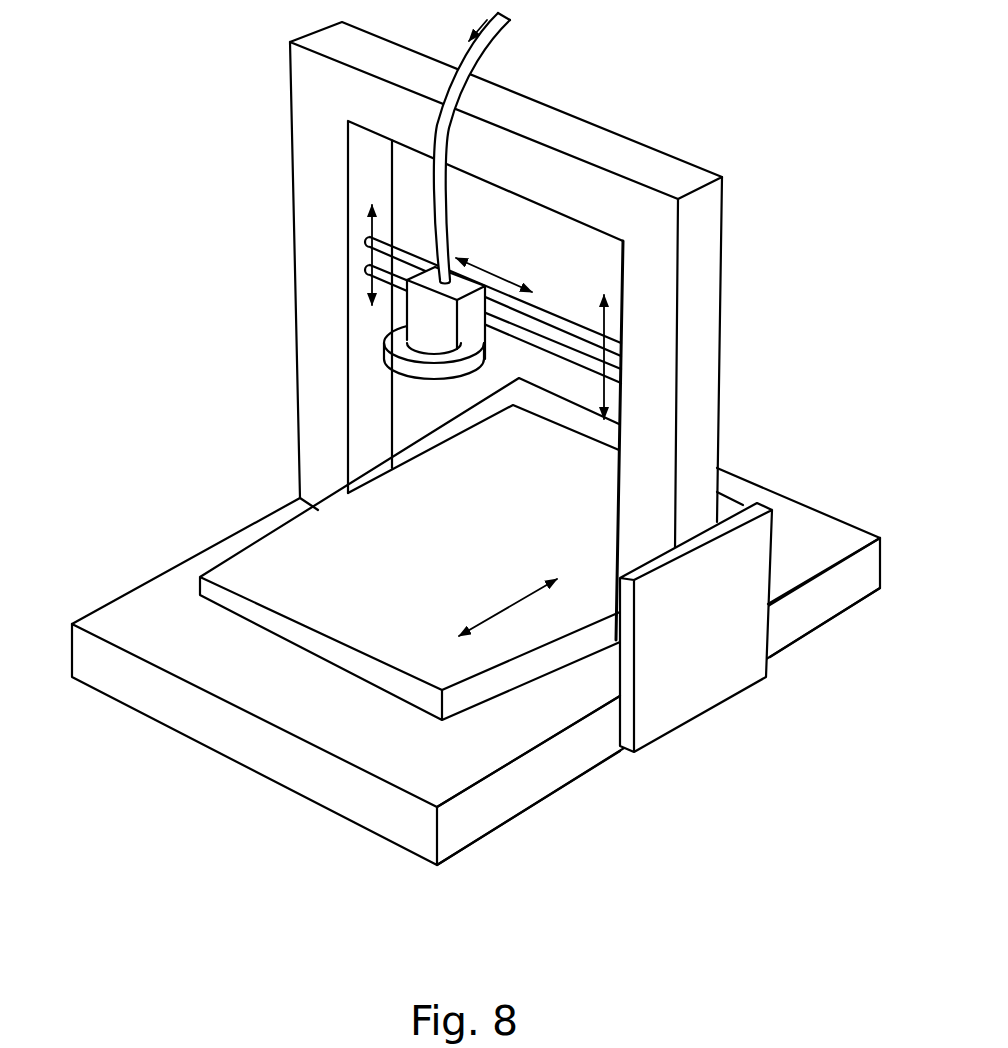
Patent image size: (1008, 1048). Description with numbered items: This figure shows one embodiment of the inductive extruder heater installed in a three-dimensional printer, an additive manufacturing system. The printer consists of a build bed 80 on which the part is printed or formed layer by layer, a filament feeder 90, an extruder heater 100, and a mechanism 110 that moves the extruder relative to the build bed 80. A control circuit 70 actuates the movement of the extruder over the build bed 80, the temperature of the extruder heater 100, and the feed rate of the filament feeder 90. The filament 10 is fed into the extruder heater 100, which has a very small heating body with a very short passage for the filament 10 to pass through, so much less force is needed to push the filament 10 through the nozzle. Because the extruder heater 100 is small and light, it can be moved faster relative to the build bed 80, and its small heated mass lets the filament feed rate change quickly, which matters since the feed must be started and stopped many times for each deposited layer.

The filament 10 is at (490, 48).
The control circuit 70 is at (695, 590).
The build bed 80 is at (282, 553).
The filament feeder 90 is at (435, 317).
The extruder heater 100 is at (420, 373).
The mechanism 110 is at (658, 260).